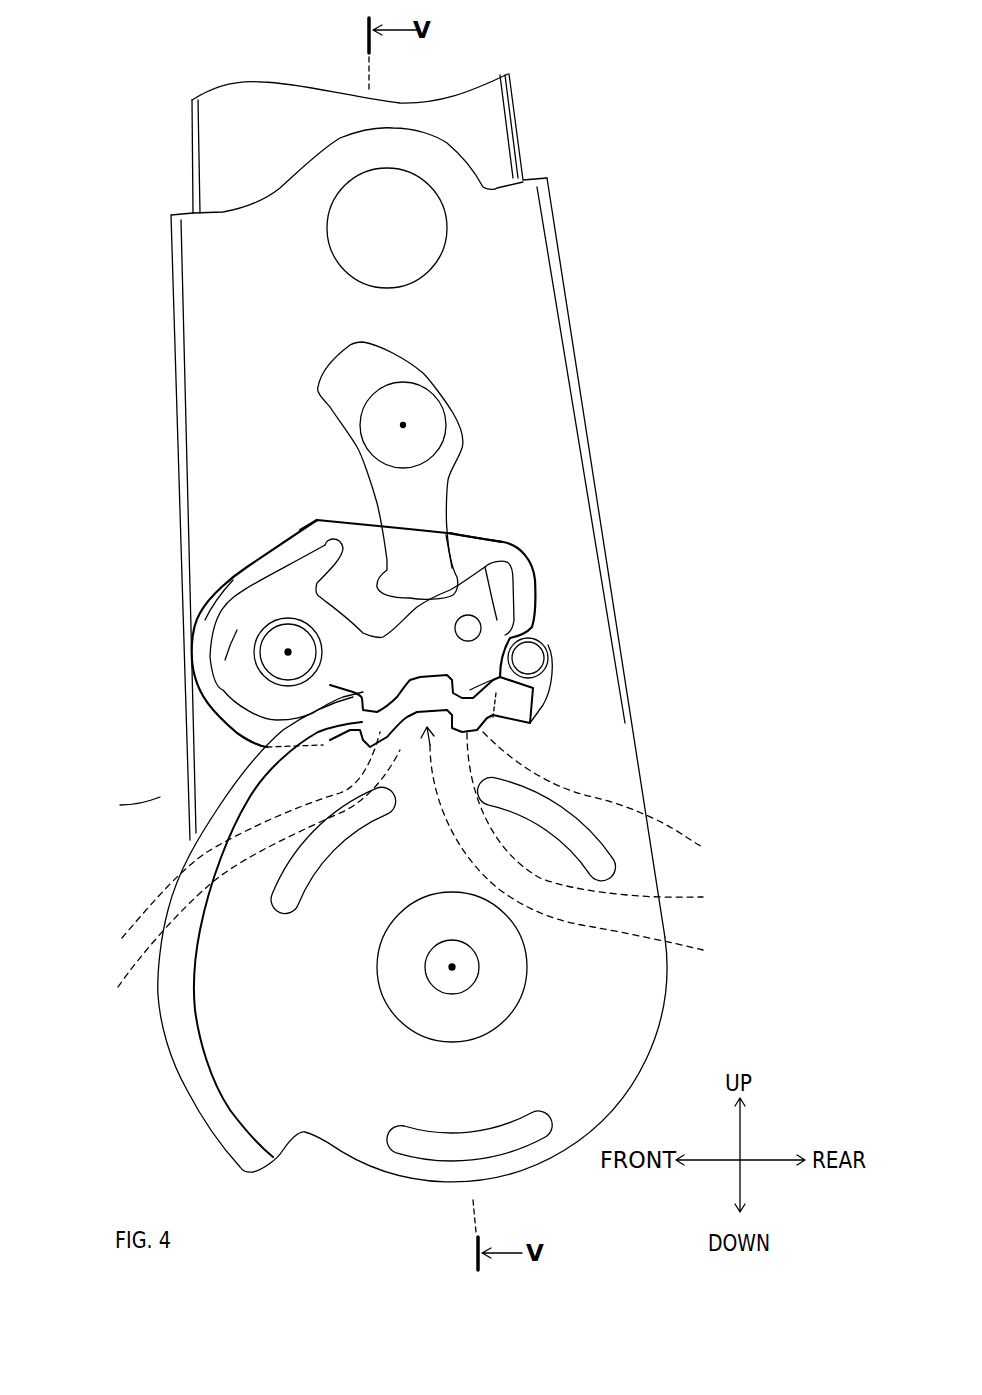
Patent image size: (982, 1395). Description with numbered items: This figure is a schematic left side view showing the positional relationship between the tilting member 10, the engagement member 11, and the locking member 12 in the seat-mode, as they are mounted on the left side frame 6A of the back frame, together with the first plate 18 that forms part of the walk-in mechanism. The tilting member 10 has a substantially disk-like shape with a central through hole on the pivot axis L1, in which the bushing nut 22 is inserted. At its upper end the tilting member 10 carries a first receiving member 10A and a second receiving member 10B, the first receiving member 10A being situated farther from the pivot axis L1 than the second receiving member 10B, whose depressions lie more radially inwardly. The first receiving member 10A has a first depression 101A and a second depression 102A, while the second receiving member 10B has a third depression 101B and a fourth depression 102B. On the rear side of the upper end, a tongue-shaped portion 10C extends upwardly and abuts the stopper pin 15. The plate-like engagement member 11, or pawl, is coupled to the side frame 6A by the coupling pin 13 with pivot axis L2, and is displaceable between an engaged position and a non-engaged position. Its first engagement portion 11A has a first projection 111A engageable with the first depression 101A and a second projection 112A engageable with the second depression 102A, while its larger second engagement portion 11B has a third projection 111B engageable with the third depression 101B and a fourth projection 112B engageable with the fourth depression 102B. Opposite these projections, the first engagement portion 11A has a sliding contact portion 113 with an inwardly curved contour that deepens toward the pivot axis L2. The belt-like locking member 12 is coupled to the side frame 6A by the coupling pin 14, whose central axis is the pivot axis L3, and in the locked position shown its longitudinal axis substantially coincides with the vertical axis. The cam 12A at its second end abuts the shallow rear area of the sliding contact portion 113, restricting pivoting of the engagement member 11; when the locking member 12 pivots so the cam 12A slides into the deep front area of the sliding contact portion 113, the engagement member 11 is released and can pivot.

The left side frame 6A is at (227, 153).
The first plate 18 is at (205, 363).
The locking member 12 is at (423, 488).
The cam 12A is at (425, 577).
The coupling pin 14 is at (423, 433).
The pivot axis L3 is at (403, 425).
The engagement member 11 is at (170, 668).
The first engagement portion 11A is at (237, 630).
The second engagement portion 11B is at (233, 580).
The sliding contact portion 113 is at (487, 537).
The coupling pin 13 is at (273, 663).
The pivot axis L2 is at (120, 805).
The stopper pin 15 is at (528, 650).
The tilting member 10 is at (330, 1110).
The bushing nut 22 is at (500, 985).
The pivot axis L1 is at (452, 967).
The second projection 112A is at (473, 690).
The second depression 102A is at (485, 737).
The first receiving member 10A is at (517, 705).
The tongue-shaped portion 10C is at (587, 668).
The fourth projection 112B is at (618, 795).
The fourth depression 102B is at (610, 822).
The second receiving member 10B is at (581, 846).
The first projection 111A is at (116, 805).
The first depression 101A is at (212, 815).
The third projection 111B is at (226, 842).
The third depression 101B is at (236, 878).